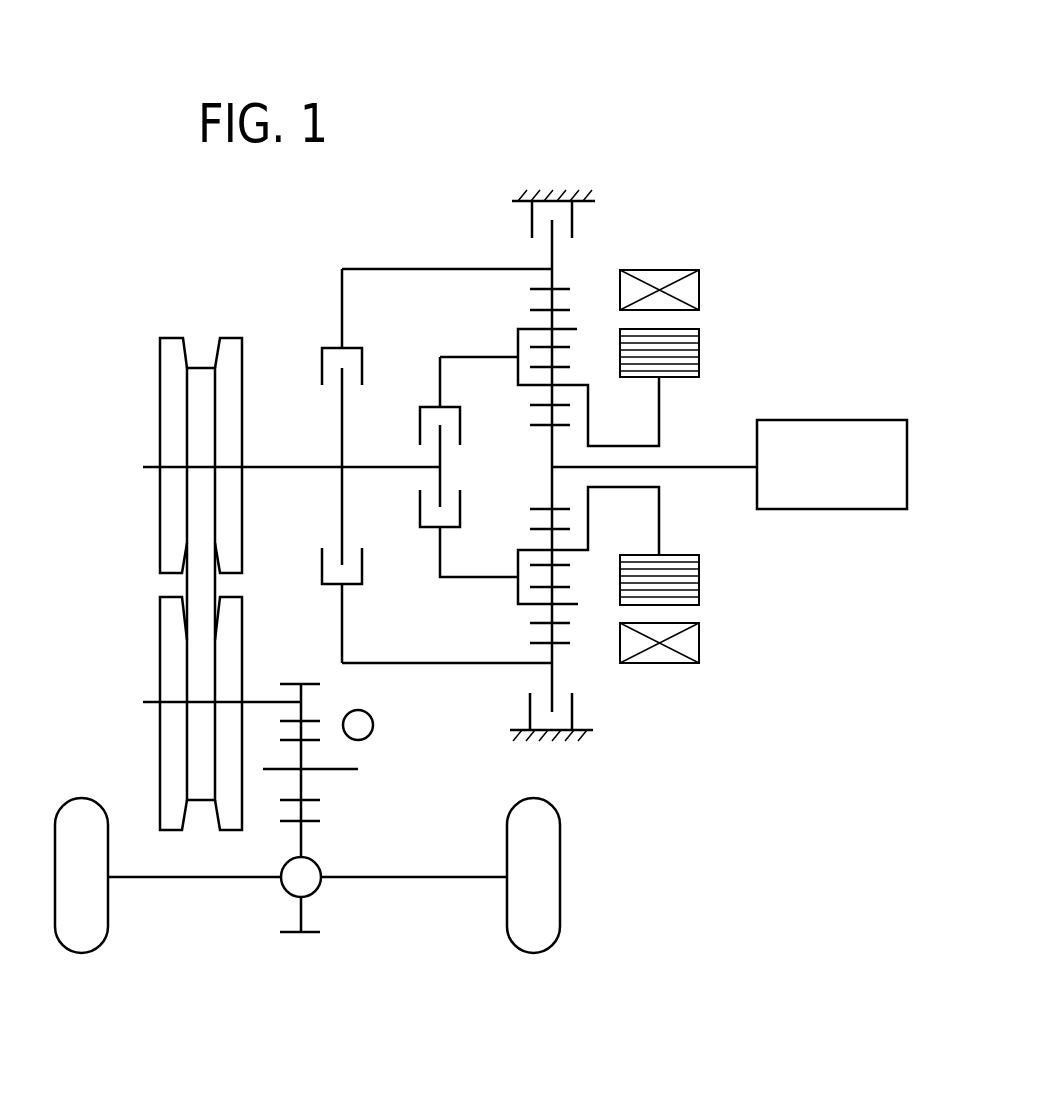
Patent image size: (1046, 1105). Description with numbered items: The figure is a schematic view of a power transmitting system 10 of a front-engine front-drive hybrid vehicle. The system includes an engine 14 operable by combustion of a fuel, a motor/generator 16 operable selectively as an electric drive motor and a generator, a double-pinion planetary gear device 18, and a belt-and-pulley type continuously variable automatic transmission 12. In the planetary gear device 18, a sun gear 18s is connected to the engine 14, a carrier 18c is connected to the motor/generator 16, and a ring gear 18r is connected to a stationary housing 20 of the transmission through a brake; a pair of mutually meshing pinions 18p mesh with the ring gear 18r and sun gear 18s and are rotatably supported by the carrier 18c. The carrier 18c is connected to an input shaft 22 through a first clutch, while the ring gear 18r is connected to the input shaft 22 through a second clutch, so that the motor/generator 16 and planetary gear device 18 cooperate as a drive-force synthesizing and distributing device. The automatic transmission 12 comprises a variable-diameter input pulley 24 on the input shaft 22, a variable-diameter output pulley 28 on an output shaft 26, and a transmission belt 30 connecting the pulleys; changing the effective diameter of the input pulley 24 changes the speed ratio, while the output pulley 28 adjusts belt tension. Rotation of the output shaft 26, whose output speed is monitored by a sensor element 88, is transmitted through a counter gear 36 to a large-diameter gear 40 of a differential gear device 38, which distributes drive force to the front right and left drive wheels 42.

The power transmitting system 10 is at (812, 160).
The automatic transmission 12 is at (138, 350).
The engine 14 is at (843, 430).
The motor/generator 16 is at (688, 242).
The planetary gear device 18 is at (495, 248).
The carrier 18c is at (465, 355).
The sun gear 18s is at (538, 428).
The pinions 18p is at (537, 528).
The ring gear 18r is at (560, 647).
The stationary housing 20 is at (583, 192).
The input shaft 22 is at (275, 467).
The input pulley 24 is at (170, 429).
The output shaft 26 is at (262, 700).
The output pulley 28 is at (170, 633).
The transmission belt 30 is at (198, 380).
The counter gear 36 is at (305, 797).
The differential gear device 38 is at (292, 883).
The large-diameter gear 40 is at (308, 933).
The drive wheels 42 is at (95, 837).
The output speed sensor 88 is at (367, 722).